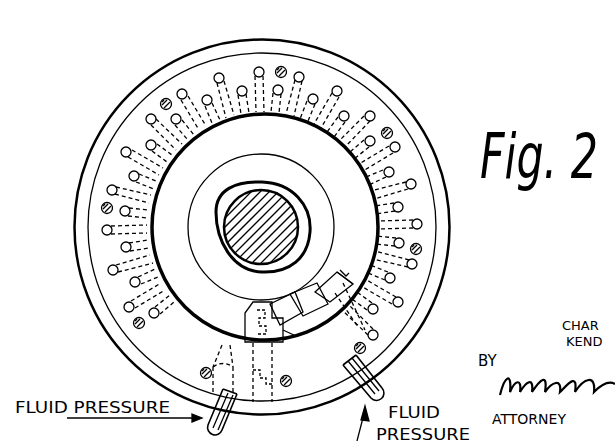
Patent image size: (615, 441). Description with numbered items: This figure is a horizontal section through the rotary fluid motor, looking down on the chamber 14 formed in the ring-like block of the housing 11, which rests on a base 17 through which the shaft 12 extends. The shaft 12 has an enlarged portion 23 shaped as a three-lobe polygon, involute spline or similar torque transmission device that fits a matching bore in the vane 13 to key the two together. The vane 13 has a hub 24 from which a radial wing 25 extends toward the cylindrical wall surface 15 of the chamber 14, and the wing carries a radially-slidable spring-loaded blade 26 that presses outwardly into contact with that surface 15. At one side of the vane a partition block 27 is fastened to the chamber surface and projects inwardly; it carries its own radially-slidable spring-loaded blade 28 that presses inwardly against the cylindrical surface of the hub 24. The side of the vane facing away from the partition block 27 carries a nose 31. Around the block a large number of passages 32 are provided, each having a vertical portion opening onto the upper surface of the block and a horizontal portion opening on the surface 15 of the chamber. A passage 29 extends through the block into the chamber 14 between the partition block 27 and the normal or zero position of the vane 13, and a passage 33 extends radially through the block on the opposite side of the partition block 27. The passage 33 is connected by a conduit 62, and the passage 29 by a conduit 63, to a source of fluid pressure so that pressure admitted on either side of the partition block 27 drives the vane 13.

The housing 11 is at (378, 83).
The shaft 12 is at (268, 196).
The vane 13 is at (193, 210).
The chamber 14 is at (247, 141).
The cylindrical wall surface 15 is at (325, 130).
The base 17 is at (80, 262).
The enlarged portion 23 is at (307, 214).
The hub 24 is at (200, 262).
The radial wing 25 is at (333, 262).
The spring-loaded blade 26 is at (323, 284).
The partition block 27 is at (252, 312).
The spring-loaded blade 28 is at (281, 321).
The passage 29 is at (293, 390).
The nose 31 is at (360, 283).
The passages 32 is at (421, 227).
The passage 33 is at (228, 345).
The conduit 62 is at (227, 428).
The conduit 63 is at (380, 399).